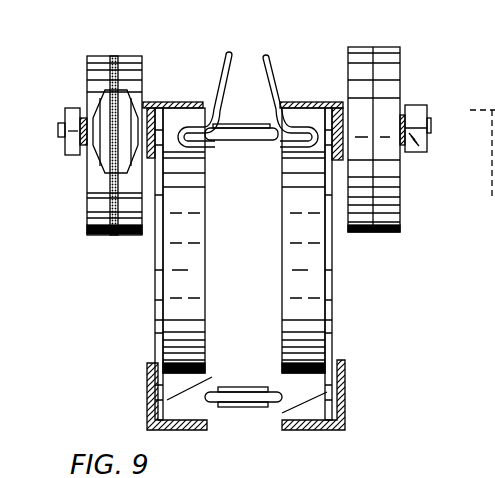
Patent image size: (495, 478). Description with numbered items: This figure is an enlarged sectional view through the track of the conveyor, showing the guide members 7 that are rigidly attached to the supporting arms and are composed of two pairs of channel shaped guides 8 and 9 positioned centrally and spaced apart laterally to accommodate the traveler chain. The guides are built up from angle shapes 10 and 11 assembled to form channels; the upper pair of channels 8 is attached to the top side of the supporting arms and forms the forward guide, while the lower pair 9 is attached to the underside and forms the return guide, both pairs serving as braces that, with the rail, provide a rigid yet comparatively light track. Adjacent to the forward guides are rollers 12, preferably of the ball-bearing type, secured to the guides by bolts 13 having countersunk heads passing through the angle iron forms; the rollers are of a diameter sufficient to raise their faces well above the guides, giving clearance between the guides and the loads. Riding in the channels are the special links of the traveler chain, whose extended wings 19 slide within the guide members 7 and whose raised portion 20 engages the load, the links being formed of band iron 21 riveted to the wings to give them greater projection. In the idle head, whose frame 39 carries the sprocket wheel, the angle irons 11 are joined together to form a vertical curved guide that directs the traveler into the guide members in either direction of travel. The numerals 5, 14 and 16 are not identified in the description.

The element 5 is at (455, 466).
The guide member 7 is at (372, 316).
The forward guide channel 8 is at (168, 96).
The return guide channel 9 is at (344, 428).
The angle shape 10 is at (337, 160).
The angle iron 11 is at (262, 438).
The roller 12 is at (407, 83).
The bolt 13 is at (431, 127).
The plate 14 is at (235, 141).
The bolt 16 is at (248, 387).
The extended wing 19 is at (293, 132).
The raised portion 20 is at (268, 88).
The band iron 21 is at (313, 110).
The frame 39 is at (372, 468).